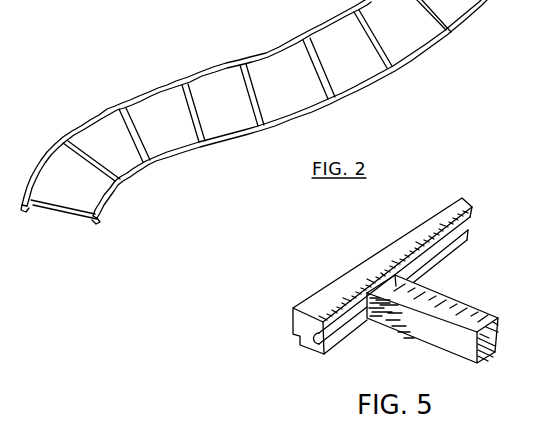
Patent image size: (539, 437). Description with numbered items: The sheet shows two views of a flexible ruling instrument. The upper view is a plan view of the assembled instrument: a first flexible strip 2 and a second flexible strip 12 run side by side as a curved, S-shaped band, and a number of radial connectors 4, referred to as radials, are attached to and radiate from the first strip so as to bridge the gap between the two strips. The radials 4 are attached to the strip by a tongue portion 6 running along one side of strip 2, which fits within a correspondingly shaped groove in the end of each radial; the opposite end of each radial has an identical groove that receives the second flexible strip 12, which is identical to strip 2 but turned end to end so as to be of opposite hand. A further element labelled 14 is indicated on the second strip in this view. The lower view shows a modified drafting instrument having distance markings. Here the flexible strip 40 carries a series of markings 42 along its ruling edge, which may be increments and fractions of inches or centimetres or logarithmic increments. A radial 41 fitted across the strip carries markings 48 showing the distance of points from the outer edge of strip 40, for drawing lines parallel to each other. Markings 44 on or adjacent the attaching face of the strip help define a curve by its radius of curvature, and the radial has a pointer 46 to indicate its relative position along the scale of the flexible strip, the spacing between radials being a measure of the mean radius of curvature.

In FIG. 2, the flexible strip 2 is at (214, 64).
In FIG. 2, the radial connectors 4 is at (145, 144).
In FIG. 2, the tongue portion 6 is at (230, 72).
In FIG. 2, the second flexible strip 12 is at (243, 138).
In FIG. 2, the rail flange 14 is at (225, 136).
In FIG. 5, the flexible strip 40 is at (423, 225).
In FIG. 5, the radials 41 is at (488, 318).
In FIG. 5, the markings 42 is at (386, 250).
In FIG. 5, the markings 44 is at (352, 300).
In FIG. 5, the pointer 46 is at (405, 283).
In FIG. 5, the markings 48 is at (454, 298).